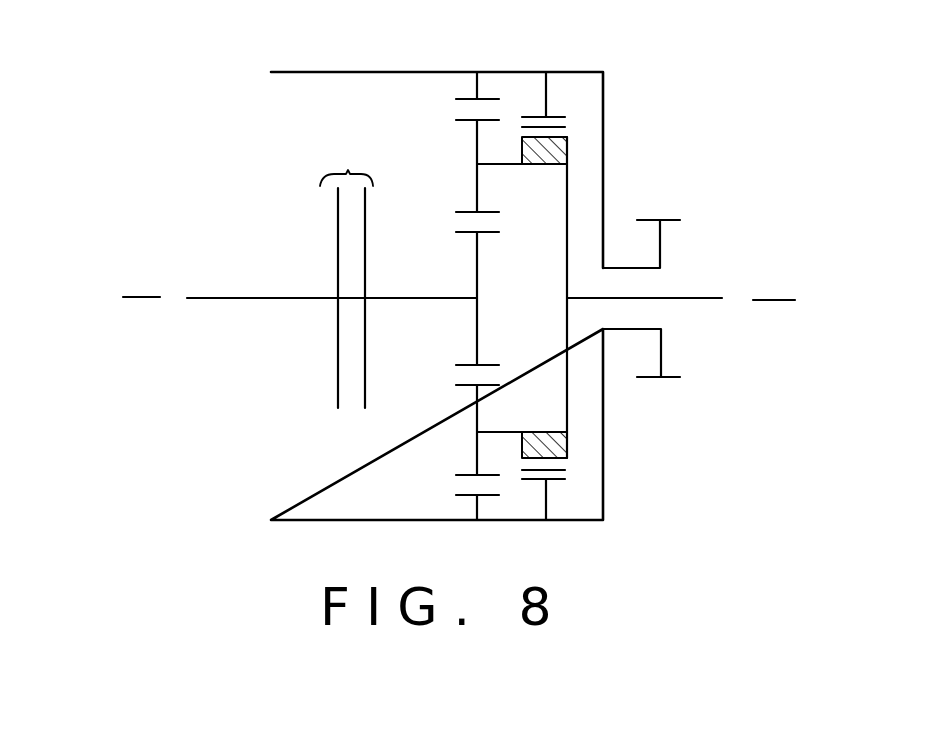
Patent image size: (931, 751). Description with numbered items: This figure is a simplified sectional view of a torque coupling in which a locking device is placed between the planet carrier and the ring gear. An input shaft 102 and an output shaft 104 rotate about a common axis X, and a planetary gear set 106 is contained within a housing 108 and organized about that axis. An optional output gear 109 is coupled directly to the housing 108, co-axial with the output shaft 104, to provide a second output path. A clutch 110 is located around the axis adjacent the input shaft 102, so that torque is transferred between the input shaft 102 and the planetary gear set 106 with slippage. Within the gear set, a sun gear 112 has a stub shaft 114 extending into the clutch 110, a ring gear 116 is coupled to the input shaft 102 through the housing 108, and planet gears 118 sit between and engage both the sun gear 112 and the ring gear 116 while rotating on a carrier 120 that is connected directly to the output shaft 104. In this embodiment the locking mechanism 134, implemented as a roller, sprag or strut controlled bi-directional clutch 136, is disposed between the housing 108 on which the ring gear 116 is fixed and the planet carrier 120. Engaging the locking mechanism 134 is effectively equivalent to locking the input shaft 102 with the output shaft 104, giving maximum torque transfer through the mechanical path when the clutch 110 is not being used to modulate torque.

The input shaft 102 is at (243, 298).
The output shaft 104 is at (692, 298).
The planetary gear set 106 is at (579, 505).
The housing 108 is at (271, 460).
The output gear 109 is at (663, 242).
The clutch 110 is at (348, 170).
The sun gear 112 is at (477, 254).
The stub shaft 114 is at (440, 298).
The ring gear 116 is at (477, 87).
The planet gears 118 is at (477, 143).
The carrier 120 is at (568, 205).
The locking mechanism 134 is at (580, 125).
The bi-directional clutch 136 is at (573, 122).